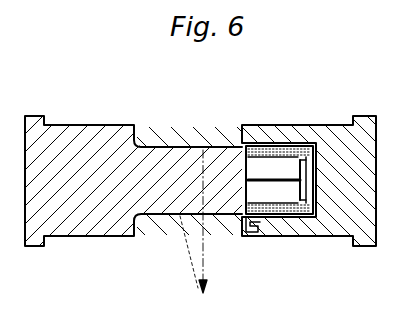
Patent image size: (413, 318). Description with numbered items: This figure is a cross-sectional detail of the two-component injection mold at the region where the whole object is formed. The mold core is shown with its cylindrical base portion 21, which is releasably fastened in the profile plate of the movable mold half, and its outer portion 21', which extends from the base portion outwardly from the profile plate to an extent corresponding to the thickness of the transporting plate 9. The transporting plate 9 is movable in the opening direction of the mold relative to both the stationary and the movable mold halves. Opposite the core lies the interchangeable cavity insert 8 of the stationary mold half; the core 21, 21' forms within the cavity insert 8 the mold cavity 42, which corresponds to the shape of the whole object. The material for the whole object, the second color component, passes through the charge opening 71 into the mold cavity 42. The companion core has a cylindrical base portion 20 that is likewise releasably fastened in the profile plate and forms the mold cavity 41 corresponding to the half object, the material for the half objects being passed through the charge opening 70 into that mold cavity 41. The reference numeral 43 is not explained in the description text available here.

The cylindrical base portion 21 is at (174, 156).
The outer portion 21' is at (285, 248).
The cylindrical base portion 20 is at (174, 219).
The cavity insert 8 is at (332, 148).
The transporting plate 9 is at (194, 234).
The elastic layer 43 is at (267, 152).
The mold cavity 42 is at (280, 211).
The mold cavity 41 is at (300, 308).
The charge opening 70 is at (248, 308).
The charge opening 71 is at (252, 234).